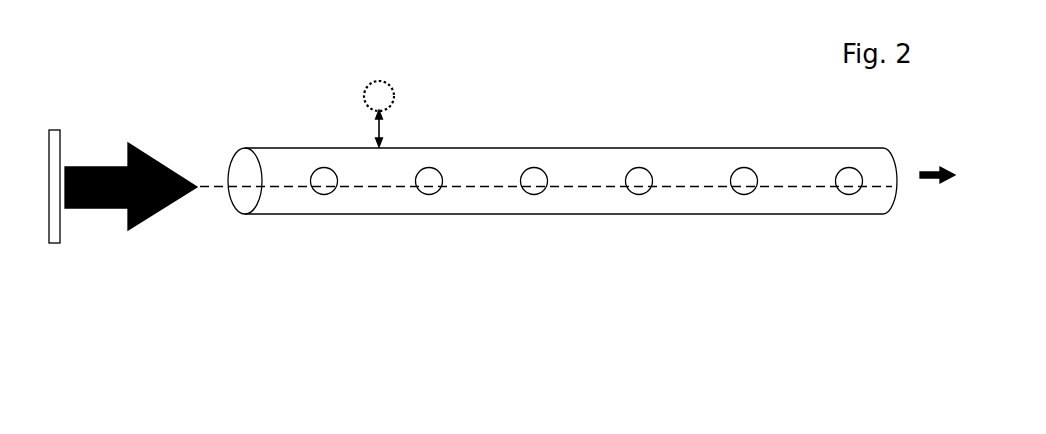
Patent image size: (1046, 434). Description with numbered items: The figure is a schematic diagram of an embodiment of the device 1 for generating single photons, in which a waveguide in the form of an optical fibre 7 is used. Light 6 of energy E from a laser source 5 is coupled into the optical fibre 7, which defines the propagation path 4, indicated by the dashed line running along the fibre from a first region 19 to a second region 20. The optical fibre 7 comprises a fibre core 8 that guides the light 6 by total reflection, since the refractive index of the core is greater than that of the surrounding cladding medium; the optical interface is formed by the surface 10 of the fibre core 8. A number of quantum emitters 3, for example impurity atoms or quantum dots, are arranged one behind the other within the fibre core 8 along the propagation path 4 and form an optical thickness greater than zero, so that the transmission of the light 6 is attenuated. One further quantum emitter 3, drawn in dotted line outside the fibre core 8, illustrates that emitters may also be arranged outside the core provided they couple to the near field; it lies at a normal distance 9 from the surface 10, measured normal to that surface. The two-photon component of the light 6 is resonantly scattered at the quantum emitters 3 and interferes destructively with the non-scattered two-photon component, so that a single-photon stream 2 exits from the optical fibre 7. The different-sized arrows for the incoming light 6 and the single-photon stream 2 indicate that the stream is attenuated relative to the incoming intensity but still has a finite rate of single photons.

The device 1 is at (566, 182).
The single-photon stream 2 is at (912, 223).
The quantum emitters 3 is at (563, 150).
The propagation path 4 is at (219, 220).
The laser source 5 is at (94, 150).
The light 6 is at (131, 221).
The optical fibre 7 is at (564, 150).
The fibre core 8 is at (564, 181).
The normal distance 9 is at (421, 98).
The surface of the fibre core 10 is at (564, 141).
The first region 19 is at (546, 122).
The second region 20 is at (919, 145).